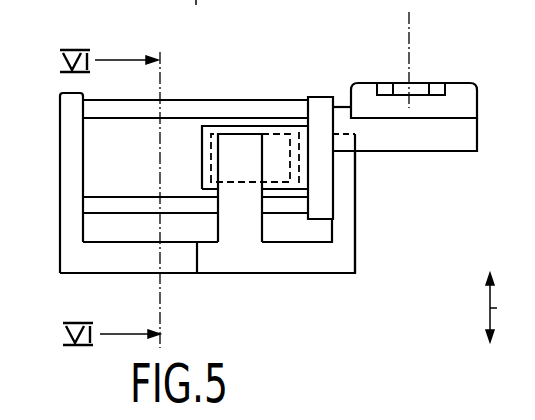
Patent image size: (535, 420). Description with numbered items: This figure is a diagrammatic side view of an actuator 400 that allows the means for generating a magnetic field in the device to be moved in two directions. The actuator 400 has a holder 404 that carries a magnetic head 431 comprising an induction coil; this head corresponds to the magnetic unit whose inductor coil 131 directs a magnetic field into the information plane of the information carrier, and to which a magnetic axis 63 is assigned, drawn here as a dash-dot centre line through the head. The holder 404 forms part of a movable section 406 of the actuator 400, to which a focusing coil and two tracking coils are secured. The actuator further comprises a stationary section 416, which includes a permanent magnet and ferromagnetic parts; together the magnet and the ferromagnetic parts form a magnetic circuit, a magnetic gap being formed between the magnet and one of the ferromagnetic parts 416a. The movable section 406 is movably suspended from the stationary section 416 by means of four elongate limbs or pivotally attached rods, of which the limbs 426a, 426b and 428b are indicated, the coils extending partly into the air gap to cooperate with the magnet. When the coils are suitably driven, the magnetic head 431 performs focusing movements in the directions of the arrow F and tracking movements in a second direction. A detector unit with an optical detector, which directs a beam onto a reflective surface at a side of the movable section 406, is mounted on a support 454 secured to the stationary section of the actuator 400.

The actuator 400 is at (48, 258).
The stationary section 416 is at (71, 232).
The ferromagnetic part 416a is at (342, 172).
The elongate limb 426a is at (182, 105).
The elongate limb 426b is at (183, 207).
The support 454 is at (250, 217).
The movable section 406 is at (318, 108).
The magnetic head 431 is at (465, 102).
The inductor coil 131 is at (386, 87).
The holder 404 is at (467, 143).
The magnetic axis 63 is at (410, 47).
The elongate limb 428b is at (513, 389).